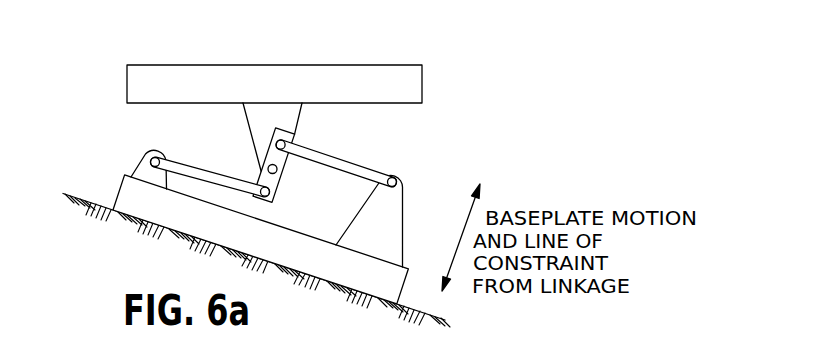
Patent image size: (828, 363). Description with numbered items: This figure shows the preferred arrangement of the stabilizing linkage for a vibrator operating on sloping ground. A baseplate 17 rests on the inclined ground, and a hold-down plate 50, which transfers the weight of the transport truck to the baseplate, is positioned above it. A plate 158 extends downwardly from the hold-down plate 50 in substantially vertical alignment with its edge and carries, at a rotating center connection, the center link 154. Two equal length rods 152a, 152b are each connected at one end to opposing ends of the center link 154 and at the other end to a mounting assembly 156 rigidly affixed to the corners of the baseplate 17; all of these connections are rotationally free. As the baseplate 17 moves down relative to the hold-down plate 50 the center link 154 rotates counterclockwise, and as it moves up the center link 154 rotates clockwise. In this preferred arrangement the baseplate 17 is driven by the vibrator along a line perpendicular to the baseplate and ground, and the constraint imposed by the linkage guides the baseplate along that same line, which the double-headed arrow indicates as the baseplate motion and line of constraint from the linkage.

The baseplate 17 is at (120, 188).
The hold-down plate 50 is at (252, 65).
The equal length rod 152a is at (212, 173).
The equal length rod 152b is at (335, 158).
The center link 154 is at (277, 188).
The mounting assembly 156 is at (150, 155).
The plate 158 is at (299, 115).